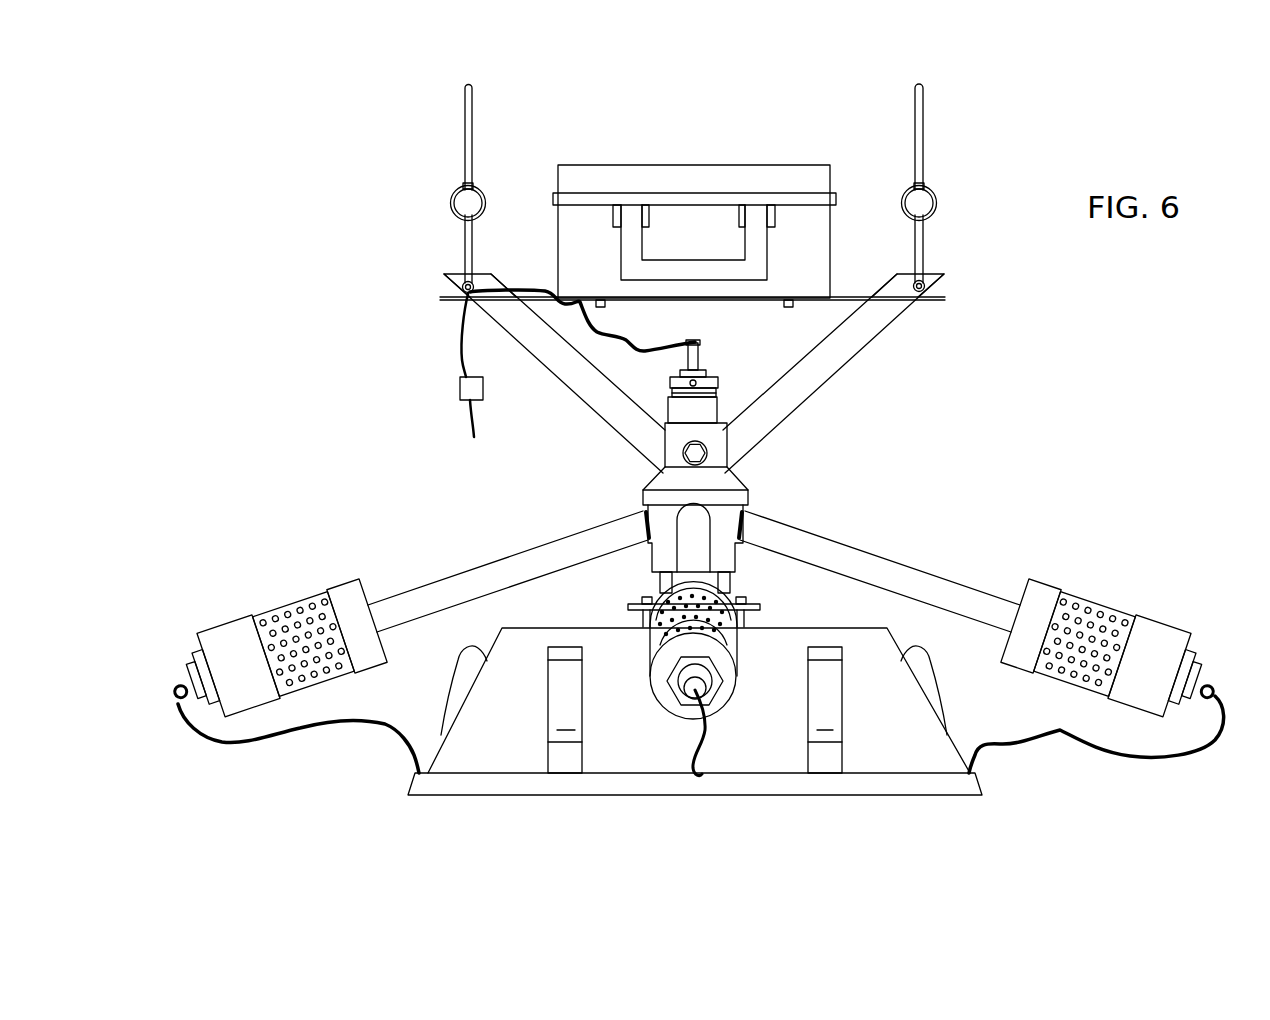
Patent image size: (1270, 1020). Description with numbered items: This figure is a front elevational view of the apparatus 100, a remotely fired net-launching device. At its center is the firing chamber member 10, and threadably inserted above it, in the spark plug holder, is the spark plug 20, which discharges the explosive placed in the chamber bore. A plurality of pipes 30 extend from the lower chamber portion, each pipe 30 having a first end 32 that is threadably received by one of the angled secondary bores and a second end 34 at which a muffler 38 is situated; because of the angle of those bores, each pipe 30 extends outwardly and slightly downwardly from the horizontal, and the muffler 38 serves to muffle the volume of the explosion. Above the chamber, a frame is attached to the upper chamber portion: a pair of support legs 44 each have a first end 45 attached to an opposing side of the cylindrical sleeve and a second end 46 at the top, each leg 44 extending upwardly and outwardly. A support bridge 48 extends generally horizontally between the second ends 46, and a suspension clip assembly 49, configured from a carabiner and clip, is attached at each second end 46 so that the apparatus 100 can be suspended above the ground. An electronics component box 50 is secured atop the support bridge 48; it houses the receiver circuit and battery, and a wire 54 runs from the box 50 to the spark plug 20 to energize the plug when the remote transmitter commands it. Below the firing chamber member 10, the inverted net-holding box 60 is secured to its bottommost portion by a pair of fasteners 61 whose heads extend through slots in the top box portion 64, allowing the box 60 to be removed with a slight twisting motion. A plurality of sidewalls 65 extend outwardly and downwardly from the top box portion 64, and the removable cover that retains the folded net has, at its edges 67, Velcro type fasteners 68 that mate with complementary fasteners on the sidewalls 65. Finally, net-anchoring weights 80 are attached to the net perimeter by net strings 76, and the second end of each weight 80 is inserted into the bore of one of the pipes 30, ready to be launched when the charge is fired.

The firing chamber member 10 is at (752, 500).
The spark plug 20 is at (702, 358).
The pipe 30 is at (462, 578).
The first end 32 is at (762, 538).
The second end 34 is at (1002, 580).
The muffler 38 is at (283, 620).
The support leg 44 is at (577, 376).
The first end 45 is at (655, 441).
The second end 46 is at (447, 278).
The support bridge 48 is at (855, 297).
The suspension clip assembly 49 is at (465, 124).
The electronics component box 50 is at (644, 175).
The wire 54 is at (610, 330).
The net-holding box 60 is at (785, 660).
The fastener 61 is at (746, 594).
The top box portion 64 is at (590, 628).
The sidewall 65 is at (920, 740).
The edge 67 is at (940, 788).
The Velcro type fastener 68 is at (455, 667).
The net string 76 is at (282, 735).
The net-anchoring weight 80 is at (188, 675).
The apparatus 100 is at (1006, 435).